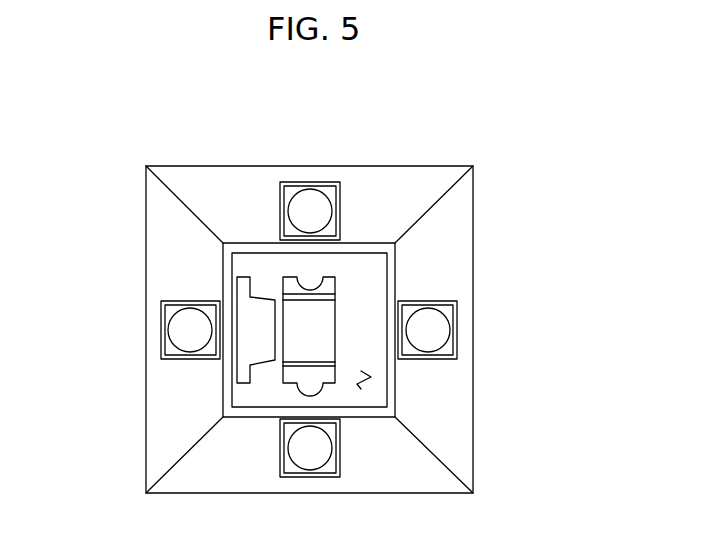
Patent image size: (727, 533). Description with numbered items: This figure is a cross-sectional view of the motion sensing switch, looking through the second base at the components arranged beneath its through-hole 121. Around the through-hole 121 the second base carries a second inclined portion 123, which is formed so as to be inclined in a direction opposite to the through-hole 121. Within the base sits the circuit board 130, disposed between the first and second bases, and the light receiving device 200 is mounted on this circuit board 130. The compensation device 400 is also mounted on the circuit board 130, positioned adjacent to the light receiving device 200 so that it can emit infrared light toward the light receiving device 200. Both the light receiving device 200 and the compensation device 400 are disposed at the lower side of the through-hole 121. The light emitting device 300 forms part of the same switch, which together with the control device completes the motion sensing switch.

The through-hole 121 is at (362, 382).
The second inclined portion 123 is at (455, 218).
The circuit board 130 is at (368, 287).
The light receiving device 200 is at (307, 308).
The light emitting device 300 is at (438, 327).
The compensation device 400 is at (247, 305).